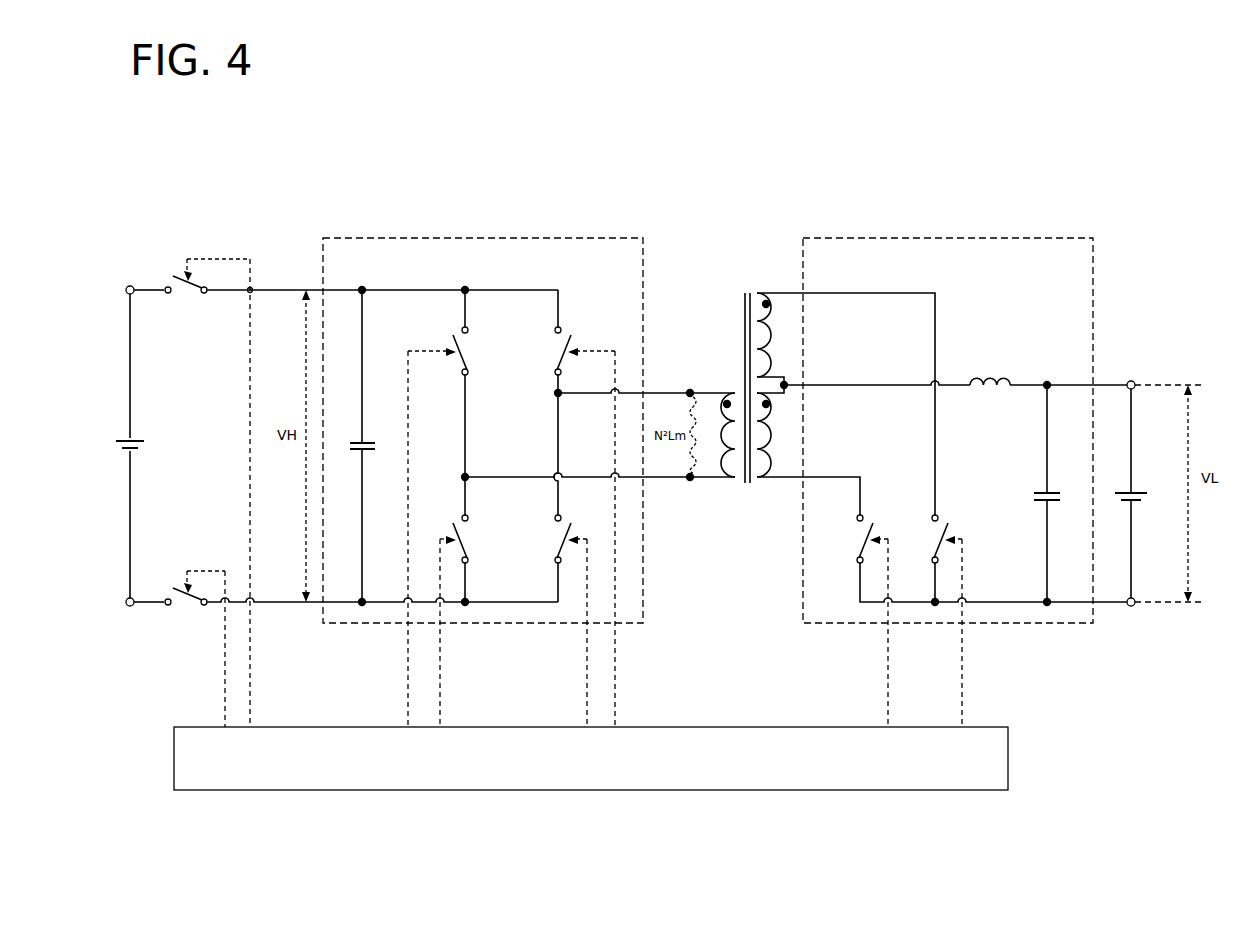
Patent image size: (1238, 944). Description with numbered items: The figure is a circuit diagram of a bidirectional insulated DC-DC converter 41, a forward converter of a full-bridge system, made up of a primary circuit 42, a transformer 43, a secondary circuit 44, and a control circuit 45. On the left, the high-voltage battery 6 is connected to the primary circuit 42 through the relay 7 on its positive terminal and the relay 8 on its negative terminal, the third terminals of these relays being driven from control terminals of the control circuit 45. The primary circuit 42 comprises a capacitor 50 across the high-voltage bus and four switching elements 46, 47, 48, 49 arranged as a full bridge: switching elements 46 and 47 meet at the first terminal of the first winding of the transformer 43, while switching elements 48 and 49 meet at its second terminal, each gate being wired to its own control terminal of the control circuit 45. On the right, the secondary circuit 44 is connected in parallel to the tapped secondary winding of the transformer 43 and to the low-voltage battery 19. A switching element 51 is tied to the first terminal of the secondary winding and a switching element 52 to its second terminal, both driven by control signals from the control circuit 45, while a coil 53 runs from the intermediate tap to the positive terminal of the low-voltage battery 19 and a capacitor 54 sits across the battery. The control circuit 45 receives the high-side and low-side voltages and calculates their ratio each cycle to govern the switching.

The high-voltage battery 6 is at (137, 438).
The relay 7 is at (185, 298).
The relay 8 is at (185, 612).
The low-voltage battery 19 is at (1138, 490).
The bidirectional insulated DC-DC converter 41 is at (681, 212).
The primary circuit 42 is at (480, 237).
The transformer 43 is at (746, 290).
The secondary circuit 44 is at (946, 237).
The control circuit 45 is at (729, 727).
The switching element 46 is at (554, 346).
The switching element 47 is at (554, 534).
The switching element 48 is at (470, 351).
The switching element 49 is at (470, 537).
The capacitor 50 is at (358, 436).
The switching element 51 is at (931, 538).
The switching element 52 is at (856, 538).
The coil 53 is at (989, 391).
The capacitor 54 is at (1052, 490).